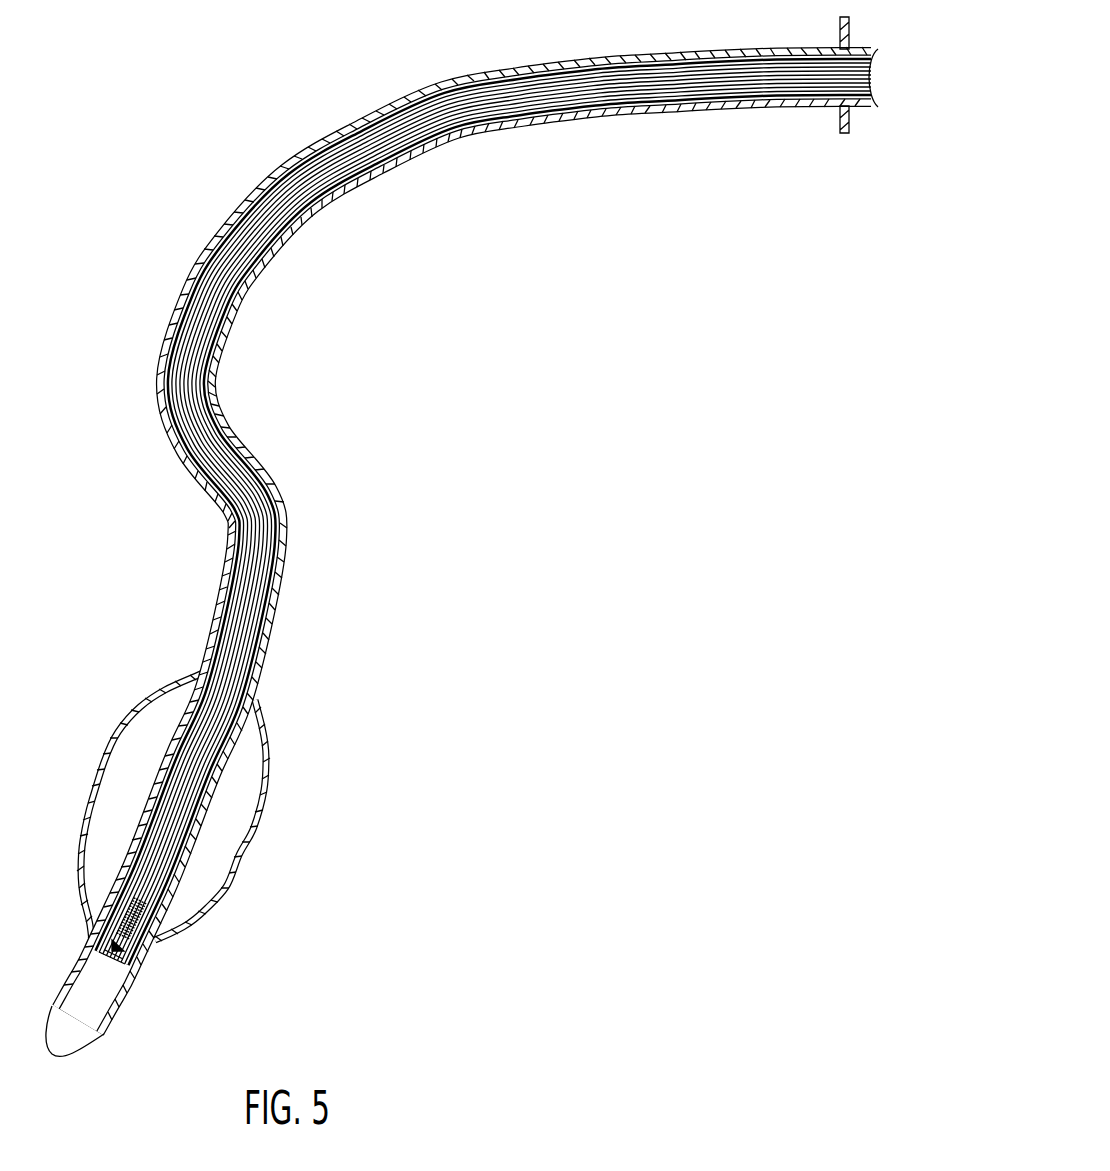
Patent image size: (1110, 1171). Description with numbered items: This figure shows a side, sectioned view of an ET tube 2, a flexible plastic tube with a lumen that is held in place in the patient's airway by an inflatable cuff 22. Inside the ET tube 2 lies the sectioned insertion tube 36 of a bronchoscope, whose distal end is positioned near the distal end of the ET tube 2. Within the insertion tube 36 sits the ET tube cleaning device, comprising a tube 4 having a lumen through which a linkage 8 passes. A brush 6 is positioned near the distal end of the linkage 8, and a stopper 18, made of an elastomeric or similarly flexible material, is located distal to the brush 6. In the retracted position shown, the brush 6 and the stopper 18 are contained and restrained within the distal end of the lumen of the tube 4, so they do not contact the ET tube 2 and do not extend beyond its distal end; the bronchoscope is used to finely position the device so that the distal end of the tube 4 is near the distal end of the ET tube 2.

The ET tube 2 is at (225, 347).
The tube 4 is at (231, 460).
The linkage 8 is at (254, 517).
The insertion tube 36 is at (281, 567).
The cuff 22 is at (222, 852).
The brush 6 is at (130, 938).
The stopper 18 is at (119, 949).